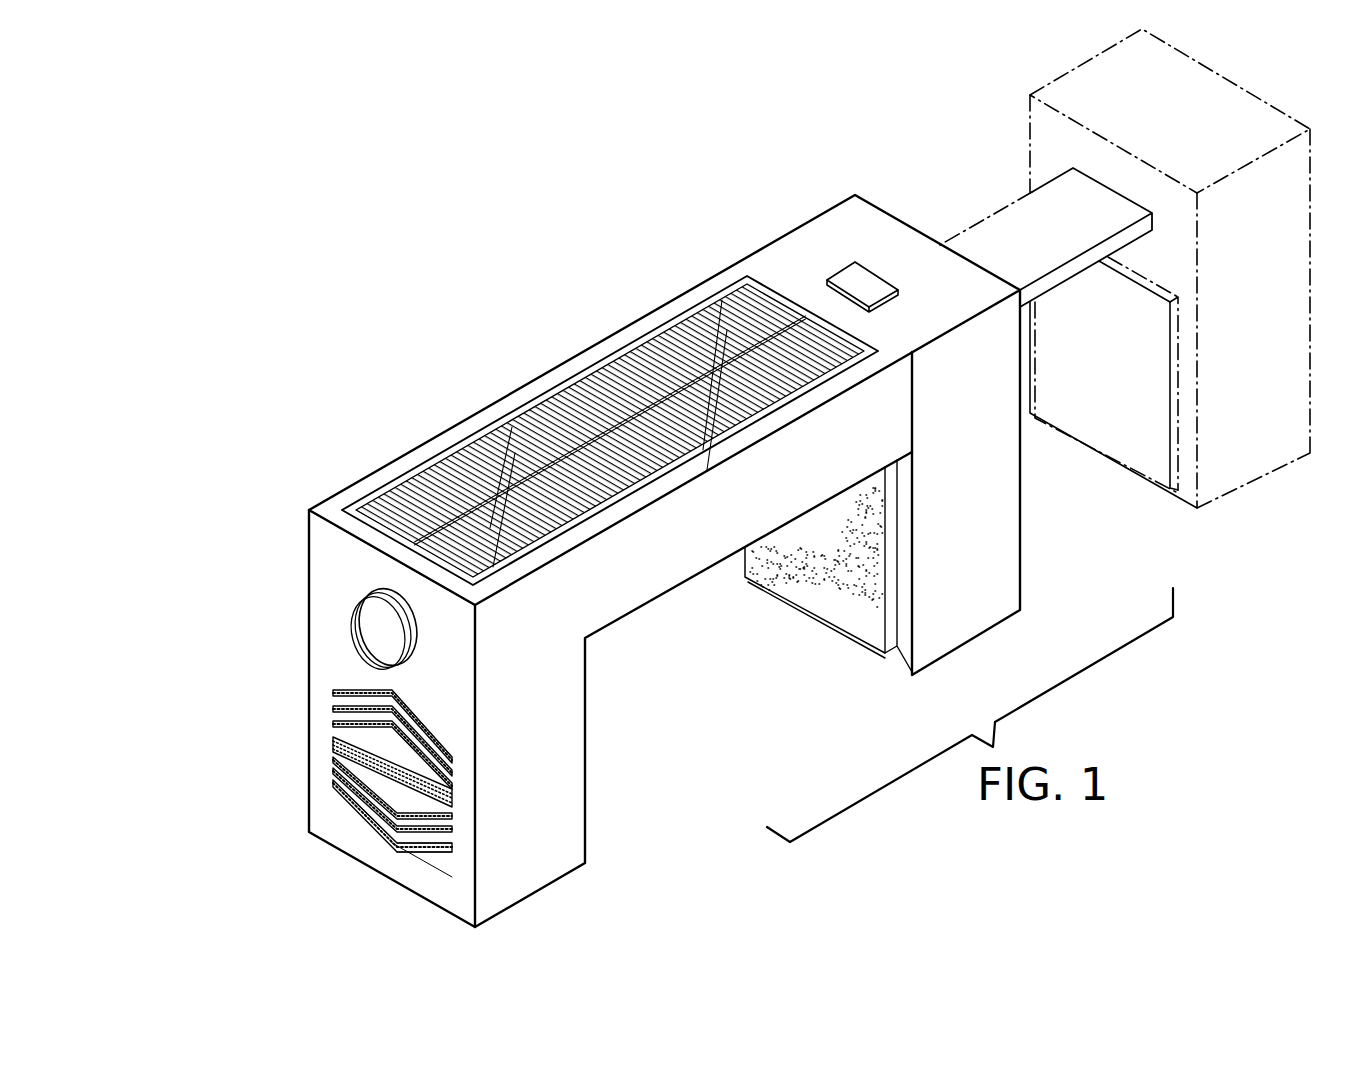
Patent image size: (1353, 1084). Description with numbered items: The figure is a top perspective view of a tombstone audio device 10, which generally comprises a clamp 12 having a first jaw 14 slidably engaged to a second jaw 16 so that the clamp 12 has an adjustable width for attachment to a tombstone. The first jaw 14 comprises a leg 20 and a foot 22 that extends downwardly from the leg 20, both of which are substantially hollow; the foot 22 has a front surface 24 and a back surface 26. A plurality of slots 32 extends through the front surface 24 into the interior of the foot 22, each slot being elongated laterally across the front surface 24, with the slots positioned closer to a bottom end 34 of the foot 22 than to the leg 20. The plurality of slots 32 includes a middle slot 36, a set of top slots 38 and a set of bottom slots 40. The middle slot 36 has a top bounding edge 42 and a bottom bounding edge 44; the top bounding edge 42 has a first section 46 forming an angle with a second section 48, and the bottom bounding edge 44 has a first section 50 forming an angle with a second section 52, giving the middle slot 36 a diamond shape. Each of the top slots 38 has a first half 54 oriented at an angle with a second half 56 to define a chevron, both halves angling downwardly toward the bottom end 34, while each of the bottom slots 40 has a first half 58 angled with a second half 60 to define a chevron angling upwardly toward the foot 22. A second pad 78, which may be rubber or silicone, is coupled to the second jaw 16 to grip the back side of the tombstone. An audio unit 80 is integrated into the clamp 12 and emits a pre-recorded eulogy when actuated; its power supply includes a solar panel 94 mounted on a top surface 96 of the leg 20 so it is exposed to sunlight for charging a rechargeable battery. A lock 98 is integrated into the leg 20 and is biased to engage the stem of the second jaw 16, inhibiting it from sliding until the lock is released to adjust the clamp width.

The tombstone audio device 10 is at (568, 195).
The clamp 12 is at (683, 258).
The first jaw 14 is at (600, 863).
The second jaw 16 is at (1053, 610).
The leg 20 is at (697, 575).
The foot 22 is at (476, 927).
The front surface 24 is at (323, 588).
The back surface 26 is at (586, 783).
The plurality of slots 32 is at (431, 880).
The bottom end 34 is at (553, 884).
The middle slot 36 is at (335, 726).
The set of top slots 38 is at (335, 711).
The set of bottom slots 40 is at (335, 783).
The top bounding edge 42 is at (395, 778).
The bottom bounding edge 44 is at (410, 848).
The first section 46 is at (333, 690).
The second section 48 is at (407, 745).
The first section 50 is at (350, 822).
The second section 52 is at (388, 838).
The first half 54 is at (350, 670).
The second half 56 is at (415, 690).
The first half 58 is at (326, 808).
The second half 60 is at (401, 869).
The second pad 78 is at (827, 603).
The audio unit 80 is at (378, 570).
The solar panel 94 is at (602, 362).
The top surface 96 is at (790, 261).
The lock 98 is at (878, 250).